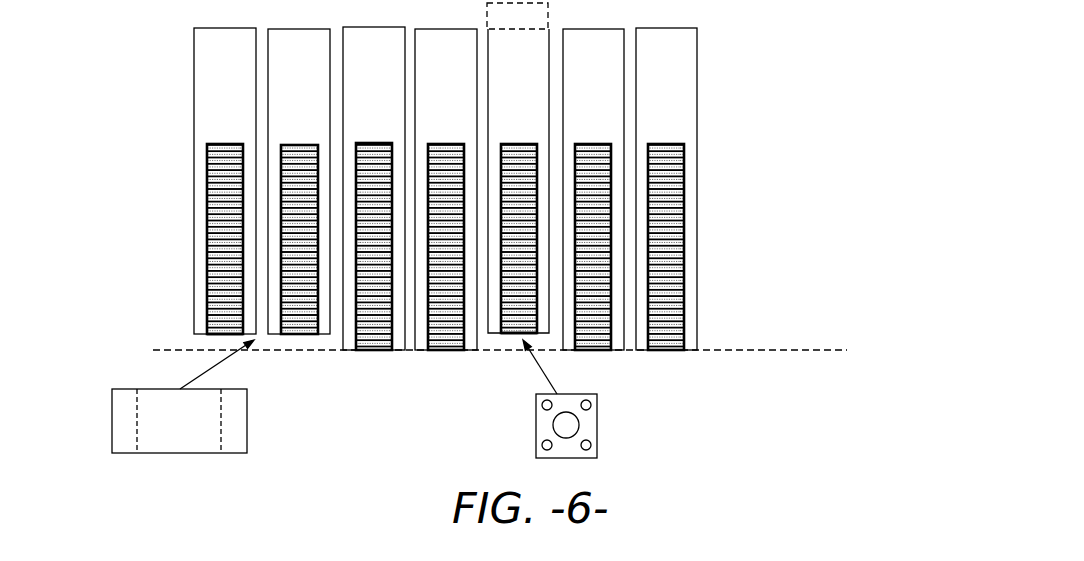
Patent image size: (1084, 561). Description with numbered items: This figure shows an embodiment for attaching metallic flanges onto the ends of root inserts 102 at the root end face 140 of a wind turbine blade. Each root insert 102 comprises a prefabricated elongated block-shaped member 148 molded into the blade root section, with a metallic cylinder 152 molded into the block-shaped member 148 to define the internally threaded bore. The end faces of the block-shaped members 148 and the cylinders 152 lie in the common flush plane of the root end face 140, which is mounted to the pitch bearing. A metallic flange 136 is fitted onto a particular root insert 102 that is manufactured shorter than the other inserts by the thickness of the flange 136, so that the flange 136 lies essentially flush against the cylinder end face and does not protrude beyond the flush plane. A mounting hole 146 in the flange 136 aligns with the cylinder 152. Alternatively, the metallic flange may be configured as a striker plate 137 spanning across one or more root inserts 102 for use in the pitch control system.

The root insert 102 is at (414, 176).
The block-shaped member 148 is at (697, 113).
The metallic cylinder 152 is at (684, 243).
The root end face 140 is at (316, 334).
The striker plate 137 is at (247, 417).
The metallic flange 136 is at (597, 413).
The mounting hole 146 is at (536, 427).